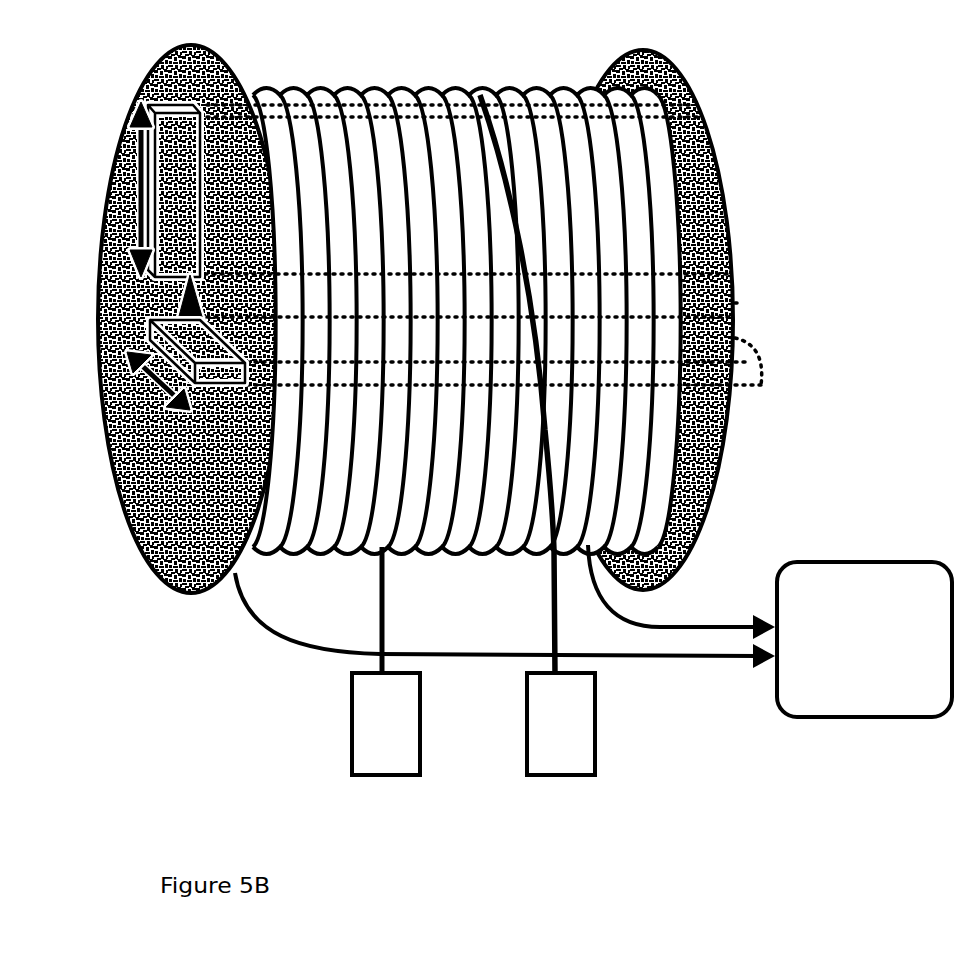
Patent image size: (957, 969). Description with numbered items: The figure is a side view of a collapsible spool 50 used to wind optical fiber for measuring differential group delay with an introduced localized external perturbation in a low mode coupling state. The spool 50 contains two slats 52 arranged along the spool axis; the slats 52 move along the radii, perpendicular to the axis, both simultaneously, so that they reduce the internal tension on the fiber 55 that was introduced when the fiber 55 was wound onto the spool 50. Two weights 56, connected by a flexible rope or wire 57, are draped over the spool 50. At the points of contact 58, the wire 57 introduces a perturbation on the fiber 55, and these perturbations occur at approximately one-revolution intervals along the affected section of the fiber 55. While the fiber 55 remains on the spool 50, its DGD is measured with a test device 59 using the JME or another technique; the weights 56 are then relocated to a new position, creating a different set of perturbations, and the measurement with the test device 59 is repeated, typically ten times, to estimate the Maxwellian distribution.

The spool 50 is at (133, 525).
The slats 52 is at (127, 348).
The fiber 55 is at (375, 88).
The weights 56 is at (562, 772).
The flexible rope, wire, or other flexible material 57 is at (372, 622).
The points of contact 58 is at (479, 97).
The test device 59 is at (840, 561).